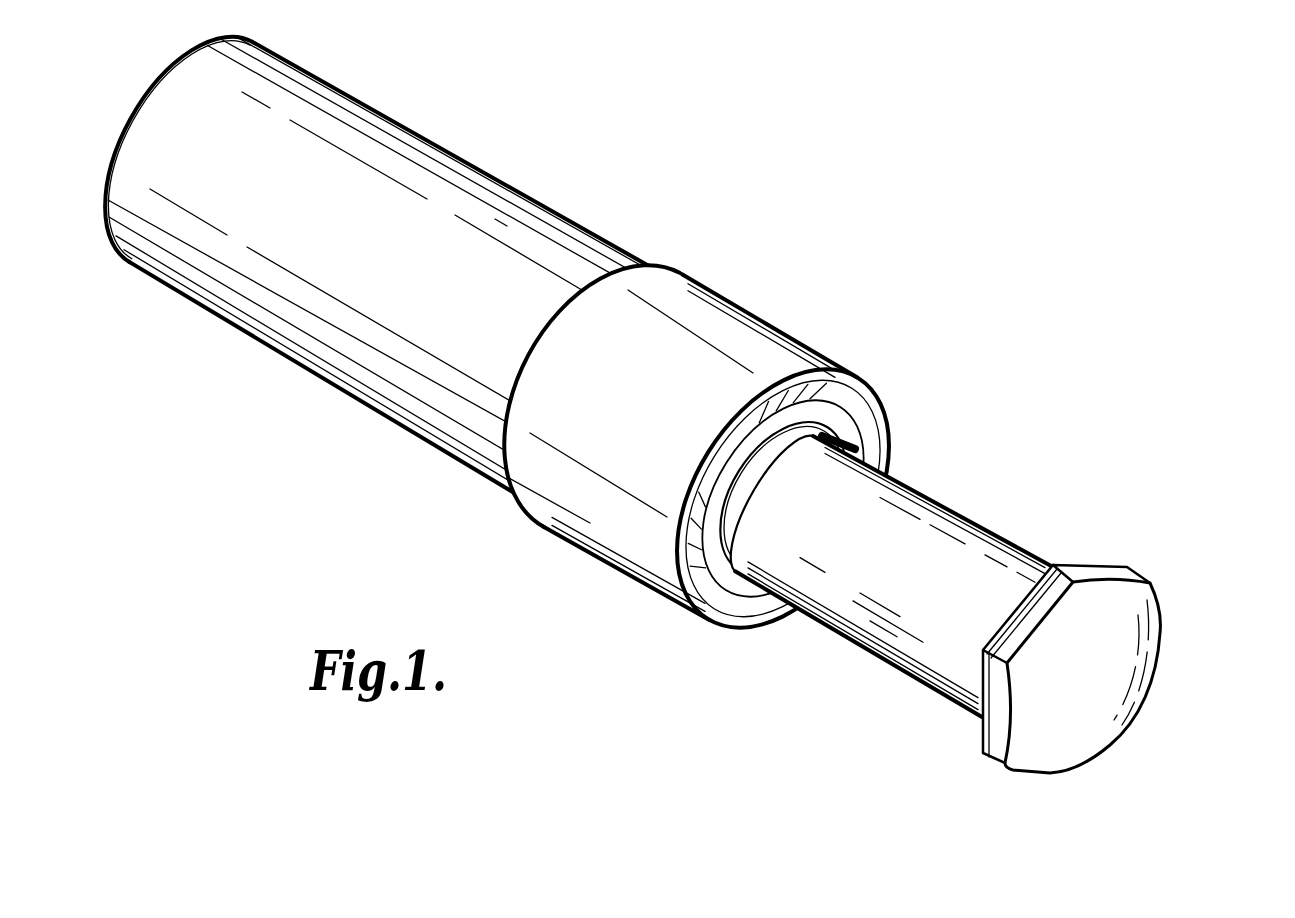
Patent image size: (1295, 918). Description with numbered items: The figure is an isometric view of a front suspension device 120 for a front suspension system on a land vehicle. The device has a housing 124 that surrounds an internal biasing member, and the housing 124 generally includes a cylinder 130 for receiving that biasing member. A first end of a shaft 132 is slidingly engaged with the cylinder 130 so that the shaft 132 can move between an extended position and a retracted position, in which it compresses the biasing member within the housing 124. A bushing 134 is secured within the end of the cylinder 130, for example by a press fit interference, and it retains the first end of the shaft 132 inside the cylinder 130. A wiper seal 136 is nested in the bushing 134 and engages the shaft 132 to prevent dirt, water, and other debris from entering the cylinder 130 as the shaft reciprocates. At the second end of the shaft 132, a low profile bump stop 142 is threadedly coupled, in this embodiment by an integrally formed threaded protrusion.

The front suspension device 120 is at (676, 234).
The housing 124 is at (244, 352).
The cylinder 130 is at (465, 162).
The shaft 132 is at (1012, 535).
The bushing 134 is at (860, 407).
The wiper seal 136 is at (853, 433).
The low profile bump stop 142 is at (1147, 630).